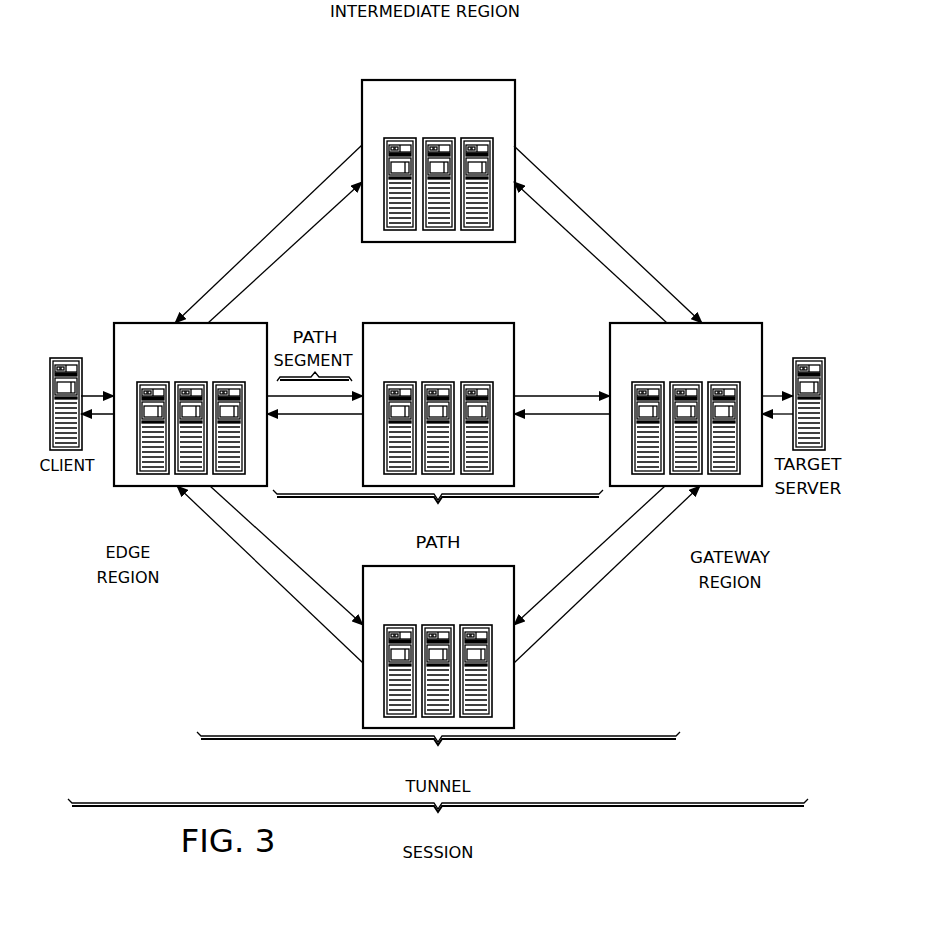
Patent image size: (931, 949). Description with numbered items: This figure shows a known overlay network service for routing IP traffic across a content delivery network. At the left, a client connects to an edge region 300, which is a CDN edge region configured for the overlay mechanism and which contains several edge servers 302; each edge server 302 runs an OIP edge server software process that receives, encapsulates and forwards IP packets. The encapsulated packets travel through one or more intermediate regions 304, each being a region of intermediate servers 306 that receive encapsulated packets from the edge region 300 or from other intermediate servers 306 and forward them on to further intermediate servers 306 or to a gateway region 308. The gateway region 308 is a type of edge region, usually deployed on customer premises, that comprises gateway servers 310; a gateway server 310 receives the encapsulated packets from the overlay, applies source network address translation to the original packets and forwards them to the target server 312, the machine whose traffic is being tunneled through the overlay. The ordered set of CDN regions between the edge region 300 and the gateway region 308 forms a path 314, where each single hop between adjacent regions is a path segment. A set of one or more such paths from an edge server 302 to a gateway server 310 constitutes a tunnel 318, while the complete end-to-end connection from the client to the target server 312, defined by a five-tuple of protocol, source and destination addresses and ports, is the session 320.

The edge region 300 is at (189, 432).
The edge server 302 is at (148, 382).
The intermediate region 304 is at (438, 78).
The intermediate server 306 is at (399, 138).
The gateway region 308 is at (686, 435).
The gateway server 310 is at (645, 382).
The target server 312 is at (808, 358).
The path 314 is at (438, 510).
The tunnel 318 is at (438, 753).
The session 320 is at (438, 819).